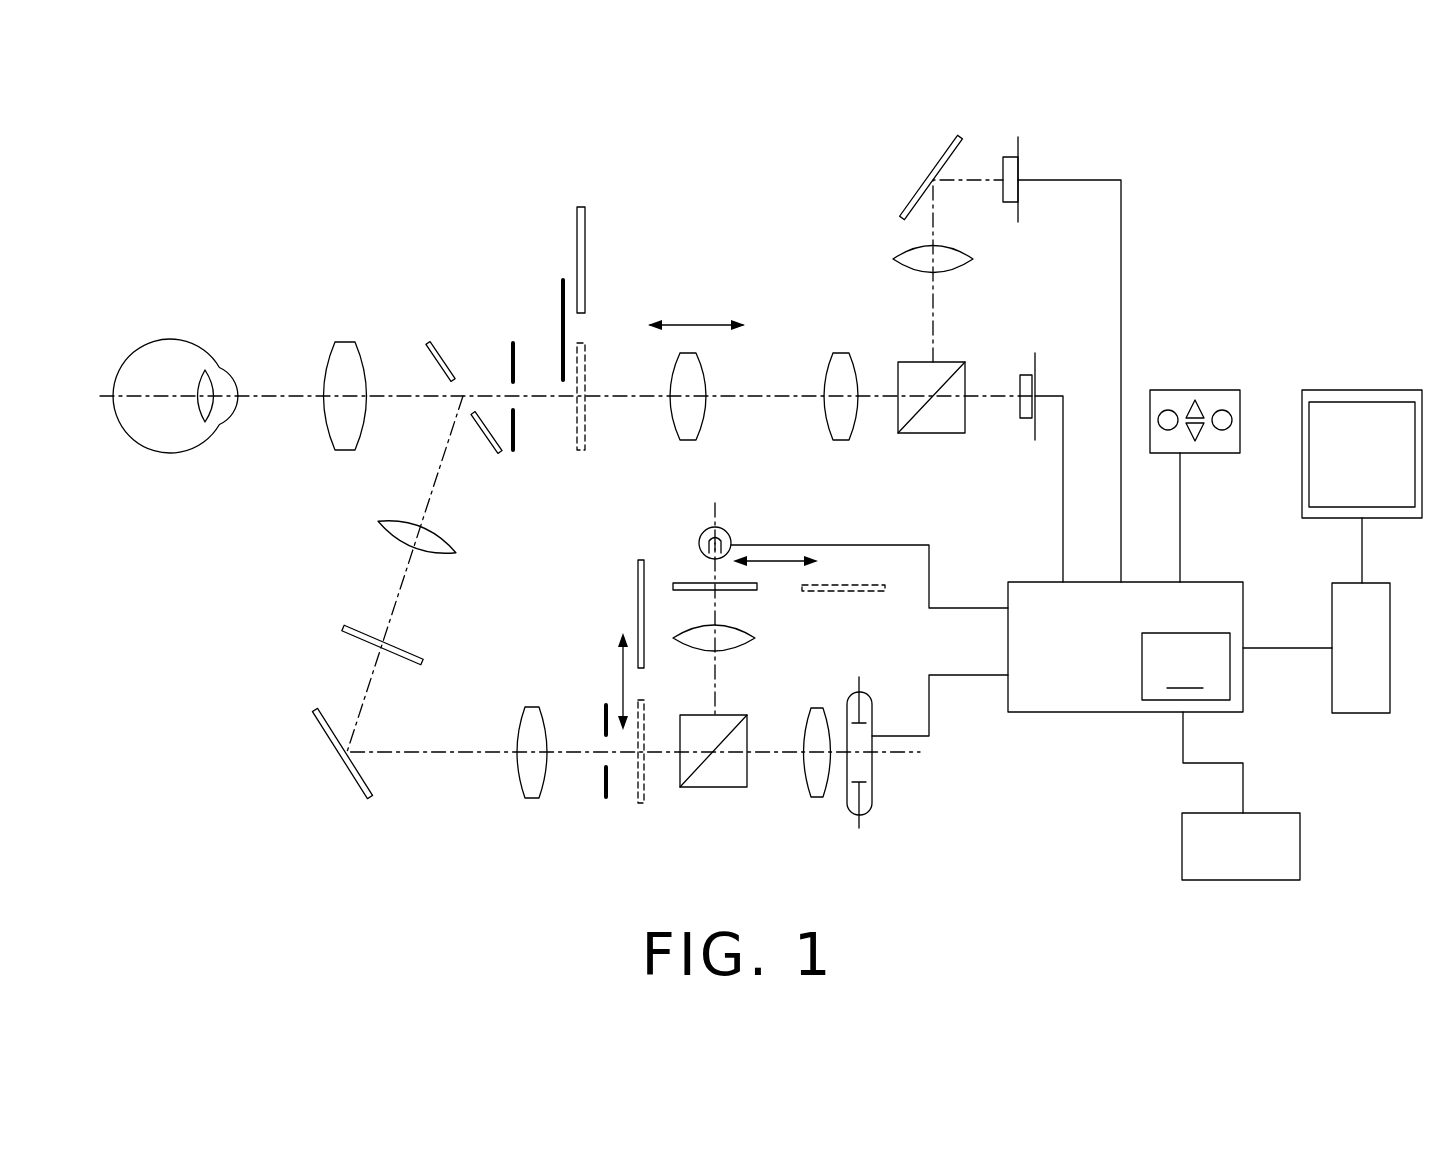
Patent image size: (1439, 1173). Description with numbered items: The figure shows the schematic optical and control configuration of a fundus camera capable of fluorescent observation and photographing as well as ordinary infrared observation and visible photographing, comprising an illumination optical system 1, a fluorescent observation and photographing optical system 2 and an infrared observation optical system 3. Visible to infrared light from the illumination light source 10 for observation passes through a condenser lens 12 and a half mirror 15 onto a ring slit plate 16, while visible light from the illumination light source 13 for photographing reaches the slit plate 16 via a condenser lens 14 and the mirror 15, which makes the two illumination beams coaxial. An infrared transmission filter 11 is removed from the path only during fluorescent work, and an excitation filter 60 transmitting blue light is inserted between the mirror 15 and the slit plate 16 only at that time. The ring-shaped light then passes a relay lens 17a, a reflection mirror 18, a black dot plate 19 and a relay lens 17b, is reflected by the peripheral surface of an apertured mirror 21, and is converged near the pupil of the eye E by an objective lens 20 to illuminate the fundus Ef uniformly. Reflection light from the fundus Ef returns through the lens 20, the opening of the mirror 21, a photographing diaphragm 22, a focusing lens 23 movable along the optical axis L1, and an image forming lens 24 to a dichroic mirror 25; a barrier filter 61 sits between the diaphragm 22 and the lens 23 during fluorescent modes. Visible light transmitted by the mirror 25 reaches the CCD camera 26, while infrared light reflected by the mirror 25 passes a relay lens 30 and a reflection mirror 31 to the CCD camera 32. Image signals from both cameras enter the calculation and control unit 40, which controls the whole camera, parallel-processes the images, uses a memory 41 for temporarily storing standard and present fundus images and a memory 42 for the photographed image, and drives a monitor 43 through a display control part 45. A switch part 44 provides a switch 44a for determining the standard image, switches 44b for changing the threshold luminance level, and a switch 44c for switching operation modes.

The illumination optical system 1 is at (284, 651).
The fluorescent observation and photographing optical system 2 is at (620, 236).
The infrared observation optical system 3 is at (832, 258).
The illumination light source for observation 10 is at (698, 540).
The infrared transmission filter 11 is at (745, 590).
The condenser lens 12 is at (735, 648).
The illumination light source for photographing 13 is at (862, 765).
The condenser lens 14 is at (814, 770).
The half mirror 15 is at (722, 773).
The ring slit plate 16 is at (607, 770).
The relay lens 17a is at (527, 773).
The relay lens 17b is at (385, 522).
The reflection mirror 18 is at (325, 732).
The black dot plate 19 is at (340, 630).
The objective lens 20 is at (340, 355).
The apertured mirror 21 is at (436, 340).
The photographing diaphragm 22 is at (513, 343).
The focusing lens 23 is at (690, 370).
The image forming lens 24 is at (830, 375).
The dichroic mirror 25 is at (943, 425).
The CCD camera for fluorescent observation and photographing 26 is at (1025, 375).
The relay lens 30 is at (955, 258).
The reflection mirror 31 is at (933, 175).
The CCD camera for infrared observation 32 is at (1012, 170).
The calculation and control unit 40 is at (1200, 582).
The memory 41 is at (1186, 666).
The memory 42 is at (1270, 813).
The monitor 43 is at (1352, 390).
The switch part 44 is at (1212, 453).
The switch 44a is at (1166, 410).
The switches 44b is at (1195, 400).
The switch 44c is at (1222, 410).
The display control part 45 is at (1390, 672).
The excitation filter 60 is at (637, 590).
The barrier filter 61 is at (577, 233).
The eye E is at (146, 476).
The fundus Ef is at (140, 353).
The optical axis L1 is at (760, 398).